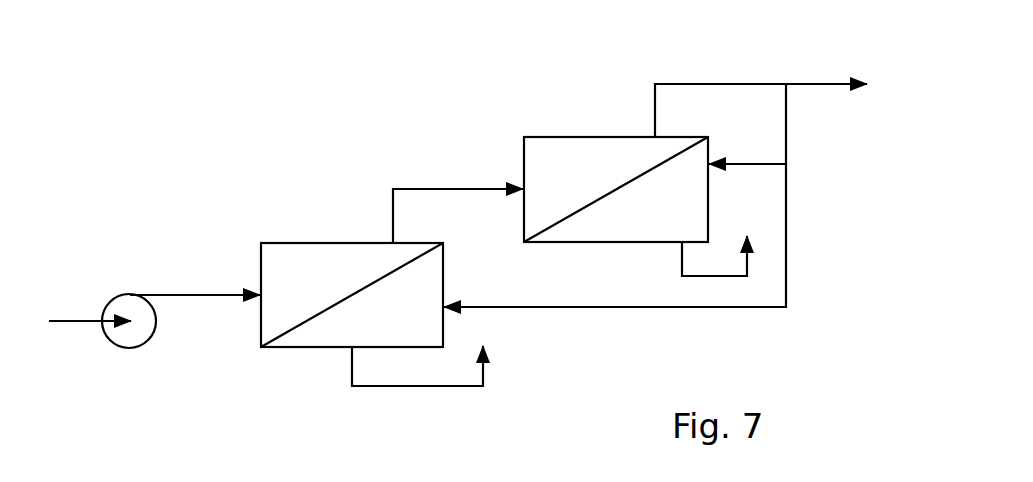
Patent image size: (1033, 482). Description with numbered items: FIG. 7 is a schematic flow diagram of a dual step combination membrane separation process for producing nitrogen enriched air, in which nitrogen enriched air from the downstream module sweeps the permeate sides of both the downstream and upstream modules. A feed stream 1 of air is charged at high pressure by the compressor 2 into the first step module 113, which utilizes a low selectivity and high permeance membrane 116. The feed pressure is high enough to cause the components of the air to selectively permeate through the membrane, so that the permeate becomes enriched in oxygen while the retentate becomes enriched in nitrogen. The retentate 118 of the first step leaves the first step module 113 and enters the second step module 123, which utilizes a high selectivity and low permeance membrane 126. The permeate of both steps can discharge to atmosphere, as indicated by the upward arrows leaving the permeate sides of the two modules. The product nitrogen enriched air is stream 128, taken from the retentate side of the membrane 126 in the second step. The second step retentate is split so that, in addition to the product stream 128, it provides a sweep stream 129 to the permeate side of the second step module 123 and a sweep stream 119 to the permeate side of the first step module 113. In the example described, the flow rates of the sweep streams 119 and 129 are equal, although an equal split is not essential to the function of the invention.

The feed stream 1 is at (70, 320).
The compressor 2 is at (128, 348).
The first step module 113 is at (288, 243).
The membrane of first step module 116 is at (288, 333).
The retentate 118 is at (412, 189).
The second step module 123 is at (550, 137).
The membrane of second step module 126 is at (647, 170).
The product NEA stream 128 is at (807, 85).
The sweep stream to second step module 129 is at (760, 162).
The sweep stream to first step module 119 is at (786, 215).